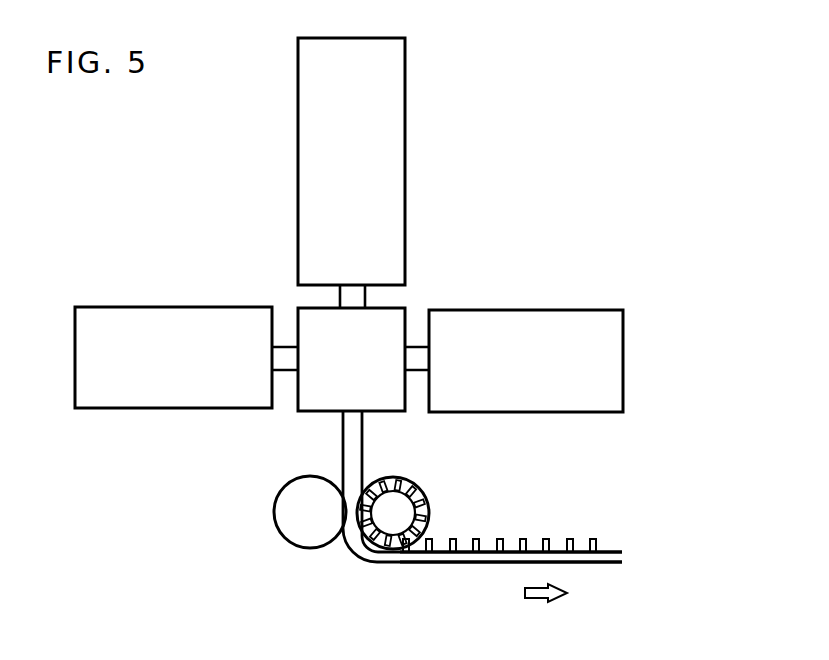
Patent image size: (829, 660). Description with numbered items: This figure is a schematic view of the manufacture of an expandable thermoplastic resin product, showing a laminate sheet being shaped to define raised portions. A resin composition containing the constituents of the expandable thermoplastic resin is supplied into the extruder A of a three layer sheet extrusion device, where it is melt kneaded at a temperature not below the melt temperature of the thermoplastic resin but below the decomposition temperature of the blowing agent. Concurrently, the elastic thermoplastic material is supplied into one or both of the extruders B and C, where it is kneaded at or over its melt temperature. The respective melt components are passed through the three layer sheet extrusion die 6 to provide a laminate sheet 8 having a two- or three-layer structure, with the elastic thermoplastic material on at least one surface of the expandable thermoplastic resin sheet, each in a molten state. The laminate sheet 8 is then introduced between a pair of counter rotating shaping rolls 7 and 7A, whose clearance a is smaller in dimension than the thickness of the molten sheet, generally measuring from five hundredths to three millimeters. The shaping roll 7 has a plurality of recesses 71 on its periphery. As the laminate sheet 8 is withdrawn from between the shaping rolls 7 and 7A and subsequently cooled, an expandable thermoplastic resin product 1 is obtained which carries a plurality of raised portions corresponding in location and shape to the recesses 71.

The extruder A is at (405, 157).
The extruder B is at (158, 307).
The extruder C is at (583, 310).
The three layer sheet extrusion die 6 is at (412, 307).
The laminate sheet 8 is at (362, 447).
The expandable thermoplastic resin product 1 is at (610, 550).
The shaping roll 7 is at (457, 503).
The recesses 71 is at (428, 519).
The shaping roll 7A is at (273, 513).
The clearance a is at (345, 537).